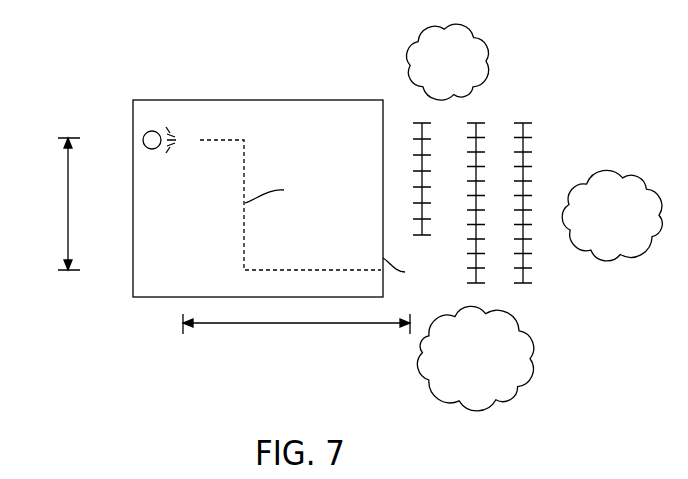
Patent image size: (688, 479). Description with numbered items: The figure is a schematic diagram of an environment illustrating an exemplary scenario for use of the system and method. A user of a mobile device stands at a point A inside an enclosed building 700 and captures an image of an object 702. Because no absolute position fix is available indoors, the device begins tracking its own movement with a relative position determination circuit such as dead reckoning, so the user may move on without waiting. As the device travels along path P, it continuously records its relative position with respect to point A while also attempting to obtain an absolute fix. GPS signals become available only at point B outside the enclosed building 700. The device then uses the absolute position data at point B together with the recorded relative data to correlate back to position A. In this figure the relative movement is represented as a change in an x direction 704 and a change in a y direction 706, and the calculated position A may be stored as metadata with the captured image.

The enclosed building 700 is at (191, 100).
The object 702 is at (143, 140).
The change in an x direction 704 is at (333, 325).
The change in a y direction 706 is at (68, 240).